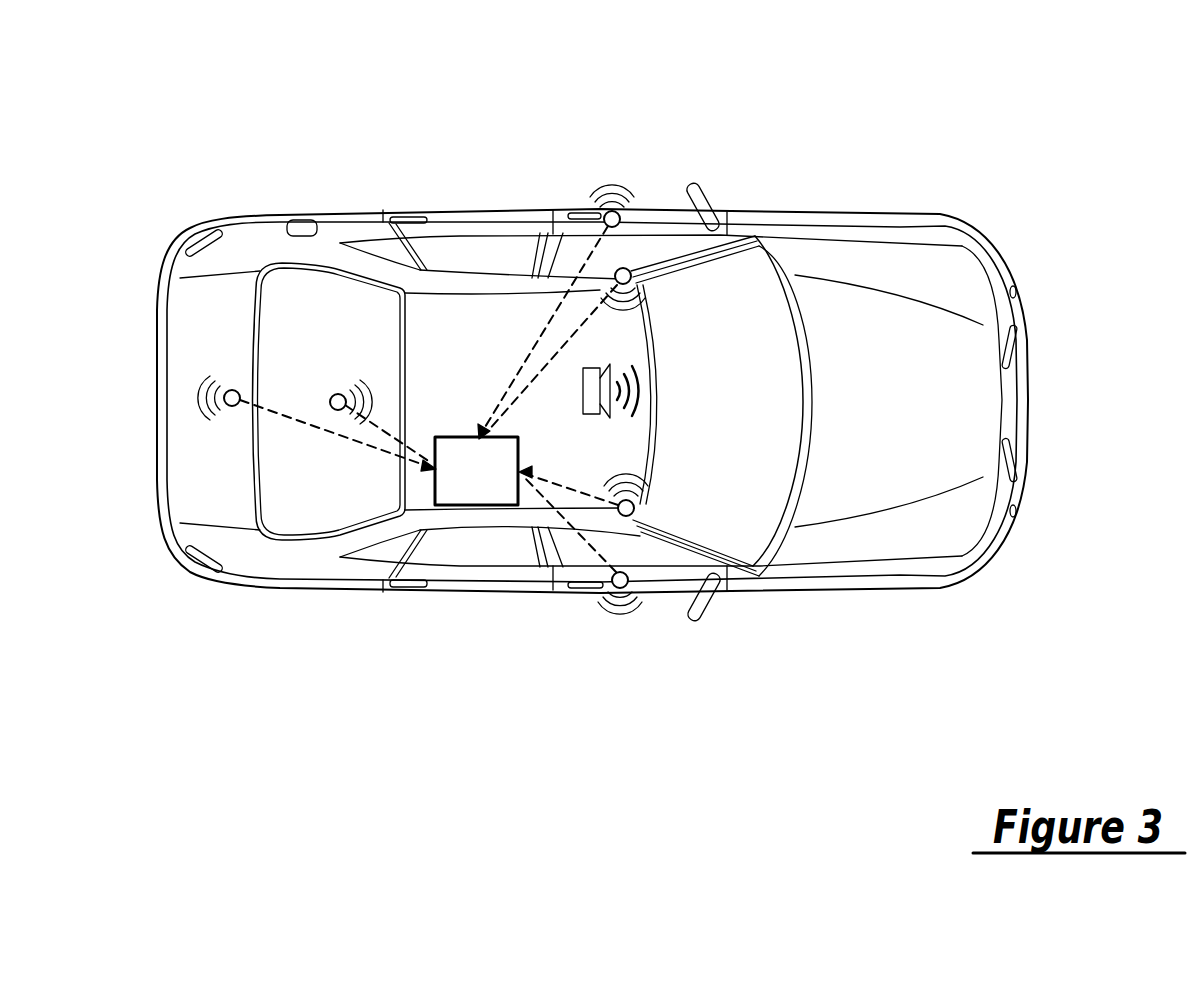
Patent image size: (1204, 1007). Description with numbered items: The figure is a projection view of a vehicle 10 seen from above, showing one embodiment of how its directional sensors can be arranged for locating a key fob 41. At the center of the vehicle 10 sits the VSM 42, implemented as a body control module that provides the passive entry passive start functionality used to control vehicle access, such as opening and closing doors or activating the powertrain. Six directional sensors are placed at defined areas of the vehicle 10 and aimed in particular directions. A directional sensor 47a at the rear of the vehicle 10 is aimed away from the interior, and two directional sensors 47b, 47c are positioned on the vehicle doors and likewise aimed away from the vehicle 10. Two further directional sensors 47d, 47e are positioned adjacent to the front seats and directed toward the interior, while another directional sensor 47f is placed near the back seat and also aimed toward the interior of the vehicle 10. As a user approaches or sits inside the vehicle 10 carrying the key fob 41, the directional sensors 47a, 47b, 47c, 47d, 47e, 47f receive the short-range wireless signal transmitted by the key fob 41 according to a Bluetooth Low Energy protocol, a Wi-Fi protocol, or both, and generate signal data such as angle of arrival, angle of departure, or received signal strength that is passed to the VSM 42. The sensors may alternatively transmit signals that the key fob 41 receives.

The vehicle 10 is at (962, 92).
The key fob 41 is at (612, 356).
The VSM 42 is at (512, 437).
The directional sensor 47a is at (228, 410).
The directional sensor 47b is at (632, 584).
The directional sensor 47c is at (611, 204).
The directional sensor 47d is at (620, 502).
The directional sensor 47e is at (634, 269).
The directional sensor 47f is at (340, 393).